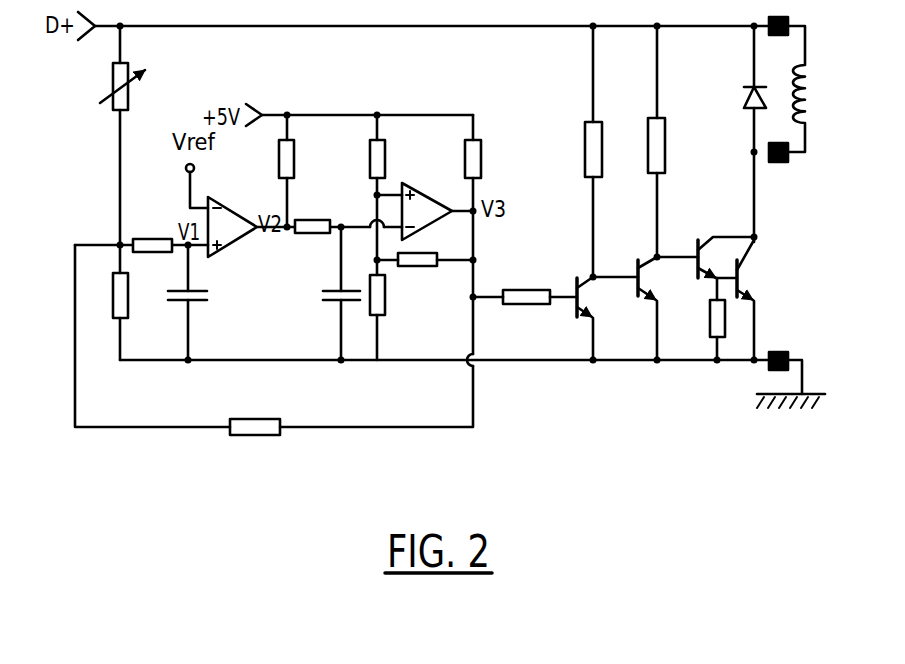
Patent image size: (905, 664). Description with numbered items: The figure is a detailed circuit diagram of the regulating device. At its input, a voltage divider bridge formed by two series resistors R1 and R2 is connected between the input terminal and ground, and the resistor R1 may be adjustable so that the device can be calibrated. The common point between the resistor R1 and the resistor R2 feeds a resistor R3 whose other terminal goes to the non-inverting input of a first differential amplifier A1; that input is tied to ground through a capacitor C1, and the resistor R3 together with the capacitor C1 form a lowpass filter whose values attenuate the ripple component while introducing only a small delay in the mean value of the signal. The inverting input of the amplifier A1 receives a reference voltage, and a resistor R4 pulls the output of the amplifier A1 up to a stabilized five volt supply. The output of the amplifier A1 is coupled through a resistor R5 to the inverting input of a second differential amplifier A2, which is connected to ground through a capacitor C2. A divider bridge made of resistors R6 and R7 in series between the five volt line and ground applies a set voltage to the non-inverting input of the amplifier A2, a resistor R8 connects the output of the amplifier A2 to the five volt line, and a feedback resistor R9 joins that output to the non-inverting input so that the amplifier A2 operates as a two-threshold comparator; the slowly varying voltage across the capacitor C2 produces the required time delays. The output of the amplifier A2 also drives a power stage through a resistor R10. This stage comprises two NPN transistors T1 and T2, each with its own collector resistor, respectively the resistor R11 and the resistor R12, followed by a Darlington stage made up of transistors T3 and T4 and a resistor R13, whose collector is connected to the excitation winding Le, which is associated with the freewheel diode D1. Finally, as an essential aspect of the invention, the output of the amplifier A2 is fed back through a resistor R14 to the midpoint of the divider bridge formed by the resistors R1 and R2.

The resistor R1 is at (112, 135).
The resistor R2 is at (106, 302).
The resistor R3 is at (152, 233).
The resistor R4 is at (302, 171).
The resistor R5 is at (312, 212).
The resistor R6 is at (394, 195).
The resistor R7 is at (392, 317).
The resistor R8 is at (487, 159).
The feedback resistor R9 is at (425, 246).
The resistor R10 is at (525, 283).
The collector resistor R11 is at (575, 151).
The collector resistor R12 is at (676, 141).
The resistor R13 is at (697, 319).
The resistor R14 is at (255, 411).
The capacitor C1 is at (194, 302).
The capacitor C2 is at (328, 293).
The differential amplifier A1 is at (232, 220).
The differential amplifier A2 is at (427, 204).
The NPN transistor T1 is at (576, 305).
The NPN transistor T2 is at (639, 294).
The transistor T3 is at (721, 242).
The transistor T4 is at (761, 256).
The freewheel diode D1 is at (741, 89).
The excitation winding Le is at (809, 89).